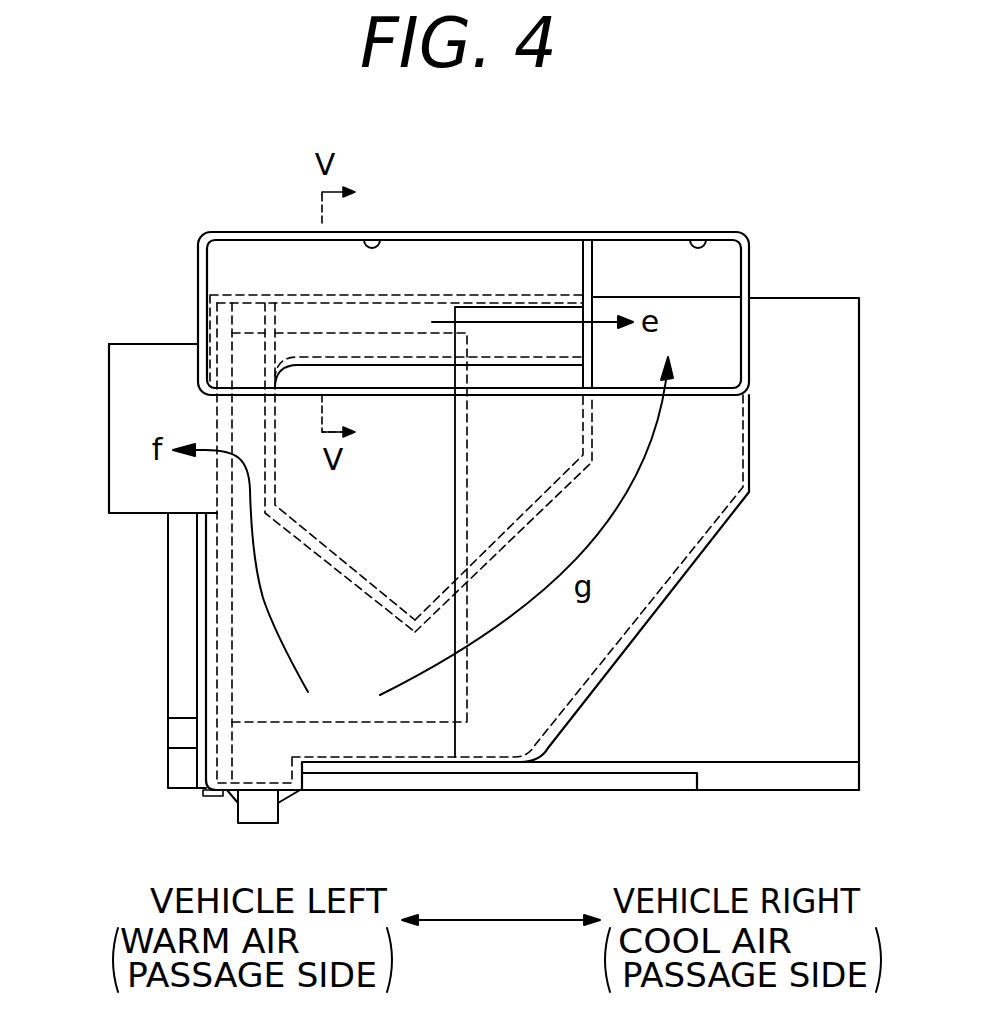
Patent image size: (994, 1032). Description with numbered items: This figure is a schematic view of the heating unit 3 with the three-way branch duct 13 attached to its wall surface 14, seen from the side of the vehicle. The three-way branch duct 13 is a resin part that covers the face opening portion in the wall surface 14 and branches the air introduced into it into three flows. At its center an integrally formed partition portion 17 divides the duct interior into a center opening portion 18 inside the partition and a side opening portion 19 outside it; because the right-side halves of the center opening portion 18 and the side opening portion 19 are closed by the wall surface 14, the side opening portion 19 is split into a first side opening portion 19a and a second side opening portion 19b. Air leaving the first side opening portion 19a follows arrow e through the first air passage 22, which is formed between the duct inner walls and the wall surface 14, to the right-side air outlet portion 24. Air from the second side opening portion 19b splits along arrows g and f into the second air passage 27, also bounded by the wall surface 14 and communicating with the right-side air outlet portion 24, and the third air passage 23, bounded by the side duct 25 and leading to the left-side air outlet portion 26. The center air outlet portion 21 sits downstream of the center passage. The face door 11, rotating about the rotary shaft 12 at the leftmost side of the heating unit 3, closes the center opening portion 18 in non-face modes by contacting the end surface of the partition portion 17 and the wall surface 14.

The heating unit 3 is at (780, 285).
The face door 11 is at (252, 655).
The rotary shaft 12 is at (227, 763).
The three-way branch duct 13 is at (665, 225).
The wall surface 14 is at (805, 340).
The partition portion 17 is at (295, 537).
The center opening portion 18 is at (283, 507).
The side opening portion 19 is at (368, 740).
The first side opening portion 19a is at (402, 317).
The second side opening portion 19b is at (273, 760).
The center air outlet portion 21 is at (372, 245).
The first air passage 22 is at (513, 313).
The third air passage 23 is at (252, 697).
The right-side air outlet portion 24 is at (698, 245).
The side duct 25 is at (147, 343).
The left-side air outlet portion 26 is at (109, 462).
The second air passage 27 is at (507, 703).